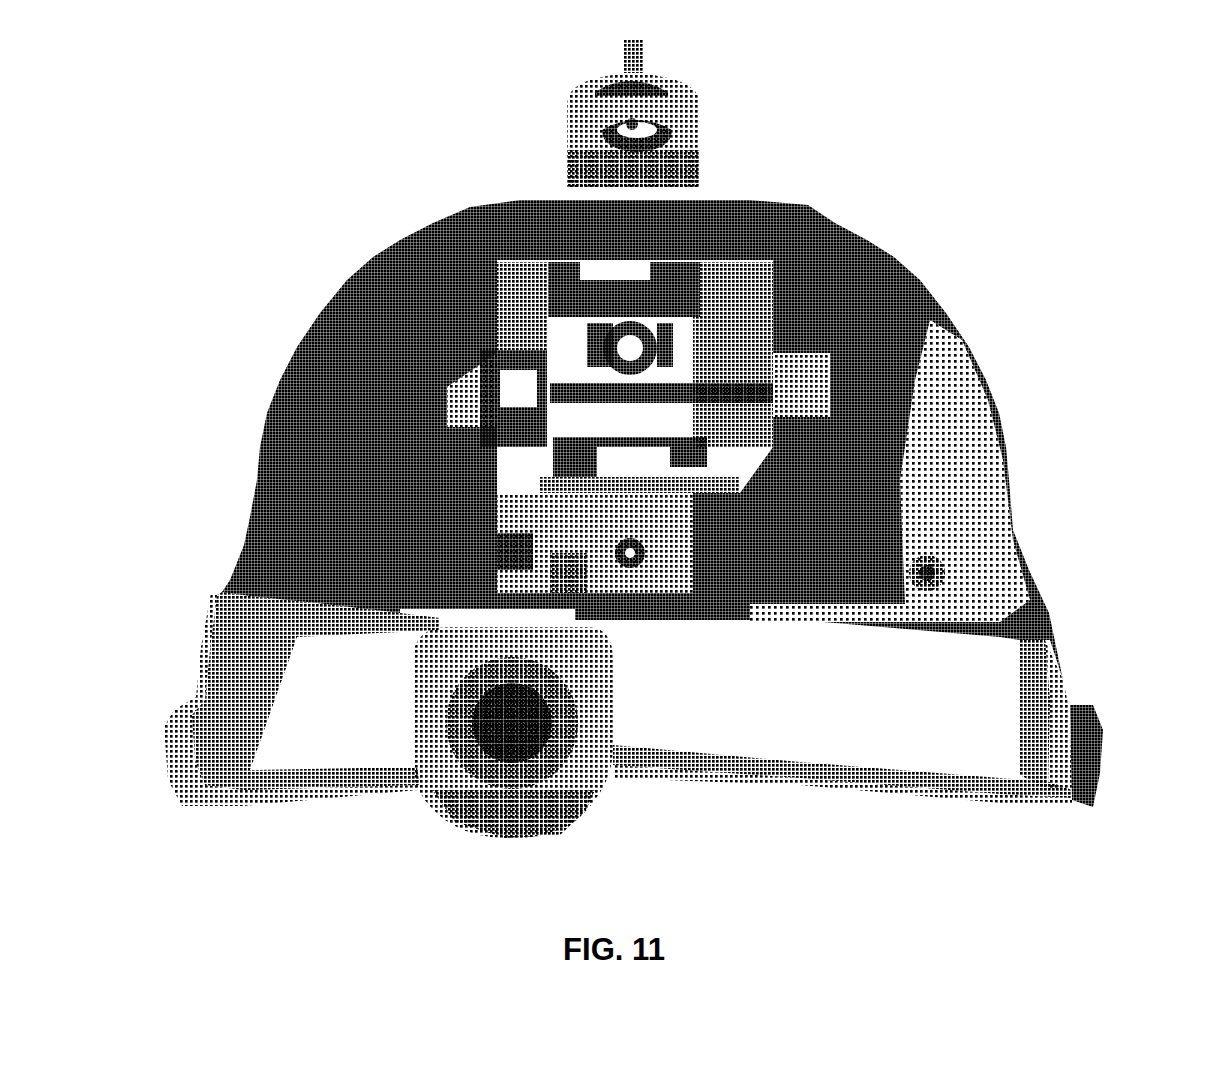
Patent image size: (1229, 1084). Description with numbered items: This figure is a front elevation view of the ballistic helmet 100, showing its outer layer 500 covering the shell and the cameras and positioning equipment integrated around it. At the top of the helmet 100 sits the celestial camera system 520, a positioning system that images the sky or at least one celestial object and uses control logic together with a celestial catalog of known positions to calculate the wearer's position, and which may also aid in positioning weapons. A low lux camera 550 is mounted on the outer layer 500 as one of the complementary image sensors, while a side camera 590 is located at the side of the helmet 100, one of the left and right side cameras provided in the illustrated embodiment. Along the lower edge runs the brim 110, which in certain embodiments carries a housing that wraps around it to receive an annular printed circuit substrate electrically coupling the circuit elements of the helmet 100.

The ballistic helmet 100 is at (151, 253).
The outer layer 500 is at (918, 274).
The celestial camera system 520 is at (692, 102).
The low lux camera 550 is at (936, 554).
The side camera 590 is at (1112, 746).
The brim 110 is at (1082, 812).